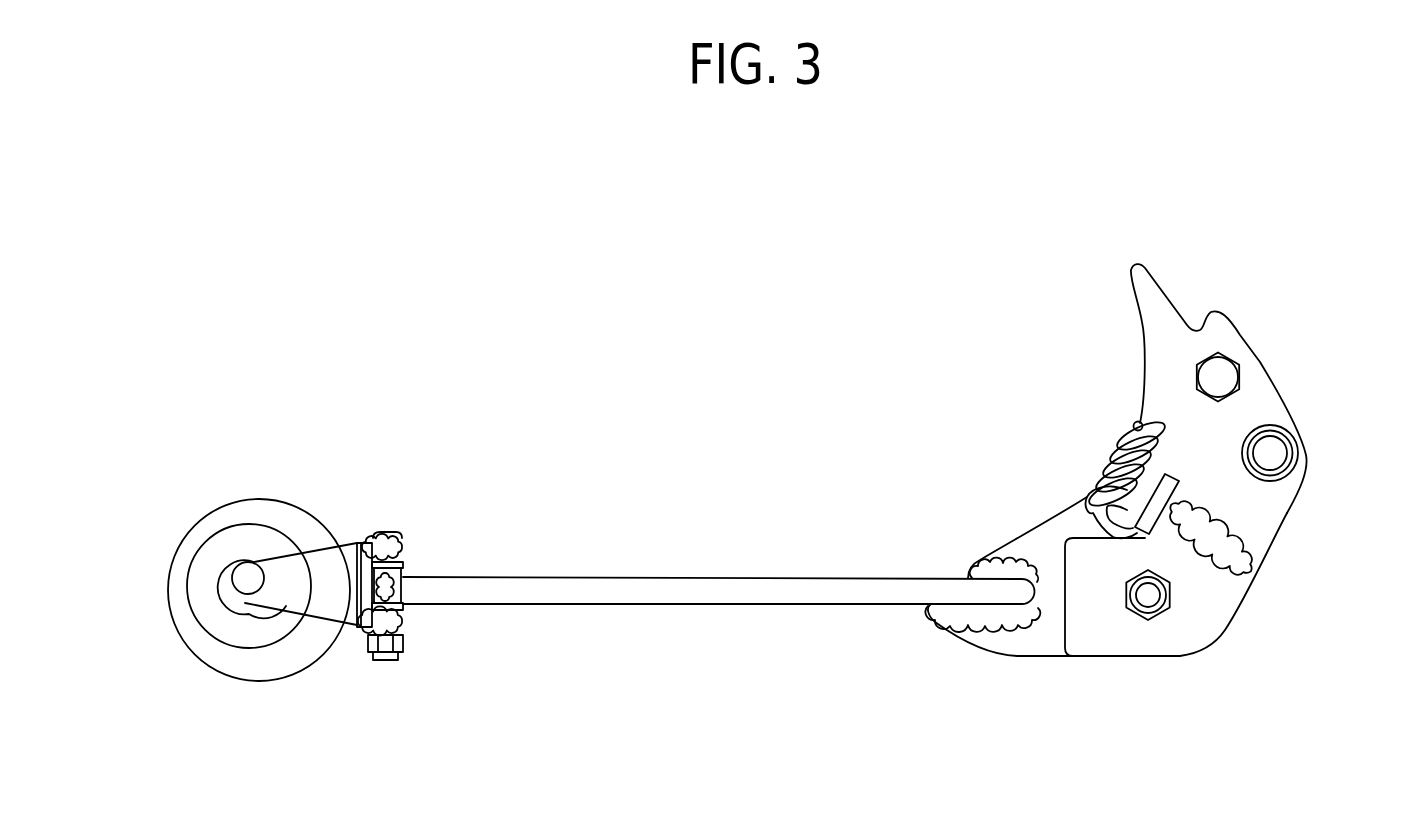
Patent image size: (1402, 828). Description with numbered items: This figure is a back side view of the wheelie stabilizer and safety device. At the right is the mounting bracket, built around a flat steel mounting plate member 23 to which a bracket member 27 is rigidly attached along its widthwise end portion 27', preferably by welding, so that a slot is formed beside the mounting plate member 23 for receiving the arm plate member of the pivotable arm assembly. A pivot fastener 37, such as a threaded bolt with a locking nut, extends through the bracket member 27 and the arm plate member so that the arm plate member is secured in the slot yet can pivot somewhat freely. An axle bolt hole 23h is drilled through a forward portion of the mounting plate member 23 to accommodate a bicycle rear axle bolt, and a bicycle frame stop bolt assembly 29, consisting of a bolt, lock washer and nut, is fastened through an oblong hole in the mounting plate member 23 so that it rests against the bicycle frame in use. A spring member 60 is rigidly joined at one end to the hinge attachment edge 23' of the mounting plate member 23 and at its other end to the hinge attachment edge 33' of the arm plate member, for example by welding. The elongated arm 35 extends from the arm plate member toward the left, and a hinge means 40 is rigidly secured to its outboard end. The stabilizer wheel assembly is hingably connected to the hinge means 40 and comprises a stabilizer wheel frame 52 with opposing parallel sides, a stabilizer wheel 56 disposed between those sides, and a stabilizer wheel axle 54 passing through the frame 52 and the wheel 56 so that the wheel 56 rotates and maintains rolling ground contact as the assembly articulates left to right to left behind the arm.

The mounting plate member 23 is at (1178, 388).
The hinge attachment edge of mounting plate member 23' is at (1104, 394).
The axle bolt hole 23h is at (1270, 453).
The bracket member 27 is at (1106, 591).
The end portion of bracket member 27' is at (1261, 539).
The bicycle frame stop bolt assembly 29 is at (1223, 377).
The hinge attachment edge of arm plate member 33' is at (1070, 503).
The elongated arm 35 is at (712, 586).
The pivot fastener 37 is at (1147, 595).
The hinge means 40 is at (390, 532).
The stabilizer wheel frame 52 is at (325, 583).
The stabilizer wheel axle 54 is at (246, 578).
The stabilizer wheel 56 is at (202, 533).
The spring member 60 is at (1105, 458).